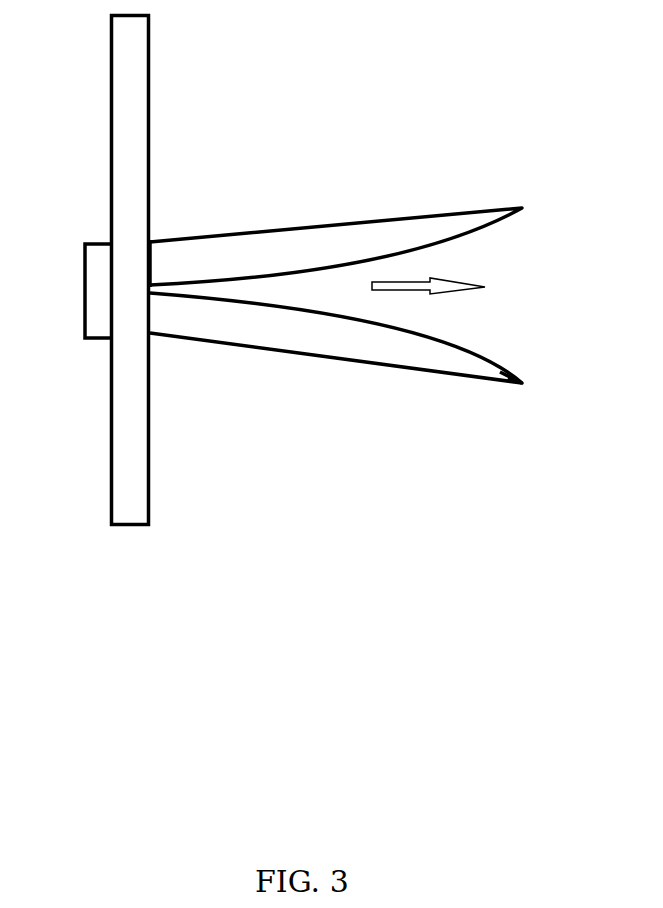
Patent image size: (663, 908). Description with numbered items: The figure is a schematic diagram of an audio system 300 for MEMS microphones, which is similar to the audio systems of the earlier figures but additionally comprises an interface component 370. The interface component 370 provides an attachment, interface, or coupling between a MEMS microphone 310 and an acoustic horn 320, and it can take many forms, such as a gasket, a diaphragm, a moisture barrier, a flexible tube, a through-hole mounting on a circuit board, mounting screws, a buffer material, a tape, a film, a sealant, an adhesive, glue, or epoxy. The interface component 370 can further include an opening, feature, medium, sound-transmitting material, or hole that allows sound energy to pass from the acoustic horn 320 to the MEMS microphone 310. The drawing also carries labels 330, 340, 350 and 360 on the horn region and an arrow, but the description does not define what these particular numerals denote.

The audio system 300 is at (273, 536).
The MEMS microphone 310 is at (98, 290).
The acoustic horn 320 is at (425, 227).
The fin root 330 is at (161, 286).
The fin tip 340 is at (522, 368).
The lower fin 350 is at (323, 292).
The flow direction arrow 360 is at (450, 287).
The interface component 370 is at (120, 483).